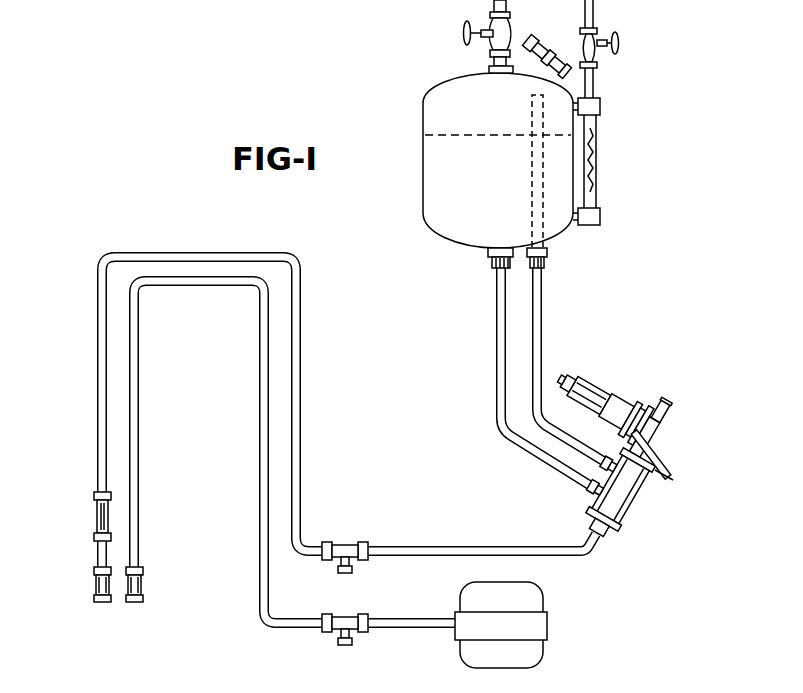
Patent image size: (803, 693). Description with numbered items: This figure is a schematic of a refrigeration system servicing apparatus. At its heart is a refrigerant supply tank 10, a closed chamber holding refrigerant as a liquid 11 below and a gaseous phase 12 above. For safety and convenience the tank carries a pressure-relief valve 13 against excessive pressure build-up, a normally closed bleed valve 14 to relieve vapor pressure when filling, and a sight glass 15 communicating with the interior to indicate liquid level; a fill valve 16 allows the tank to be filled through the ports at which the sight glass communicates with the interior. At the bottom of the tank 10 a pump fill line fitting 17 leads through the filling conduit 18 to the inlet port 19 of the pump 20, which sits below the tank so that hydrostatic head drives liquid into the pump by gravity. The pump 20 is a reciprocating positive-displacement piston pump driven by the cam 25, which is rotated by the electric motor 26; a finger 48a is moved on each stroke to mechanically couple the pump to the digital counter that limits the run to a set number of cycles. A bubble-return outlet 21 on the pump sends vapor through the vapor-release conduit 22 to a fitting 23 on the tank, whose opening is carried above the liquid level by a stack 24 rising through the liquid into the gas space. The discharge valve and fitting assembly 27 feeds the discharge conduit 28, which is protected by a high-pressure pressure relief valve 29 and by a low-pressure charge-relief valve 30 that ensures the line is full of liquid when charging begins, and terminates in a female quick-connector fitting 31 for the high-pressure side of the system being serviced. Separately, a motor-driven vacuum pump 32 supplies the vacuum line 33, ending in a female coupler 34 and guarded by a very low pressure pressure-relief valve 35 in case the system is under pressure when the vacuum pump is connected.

The refrigerant supply tank 10 is at (423, 162).
The liquid 11 is at (440, 200).
The gaseous phase 12 is at (441, 106).
The pressure-relief valve 13 is at (555, 40).
The bleed valve 14 is at (512, 28).
The sight glass 15 is at (592, 152).
The fill valve 16 is at (599, 40).
The pump fill line fitting 17 is at (490, 257).
The filling conduit 18 is at (495, 320).
The inlet port 19 is at (590, 487).
The pump 20 is at (630, 503).
The bubble-return outlet 21 is at (603, 458).
The vapor-release conduit 22 is at (538, 318).
The fitting 23 is at (552, 253).
The stack 24 is at (528, 180).
The cam 25 is at (665, 412).
The electric motor 26 is at (607, 390).
The discharge valve and fitting assembly 27 is at (605, 533).
The discharge conduit 28 is at (491, 547).
The pressure relief valve 29 is at (345, 543).
The charge-relief valve 30 is at (95, 520).
The female quick-connector fitting 31 is at (95, 585).
The vacuum pump 32 is at (548, 628).
The vacuum line 33 is at (417, 630).
The female coupler 34 is at (143, 585).
The pressure-relief valve 35 is at (343, 615).
The finger 48a is at (665, 460).